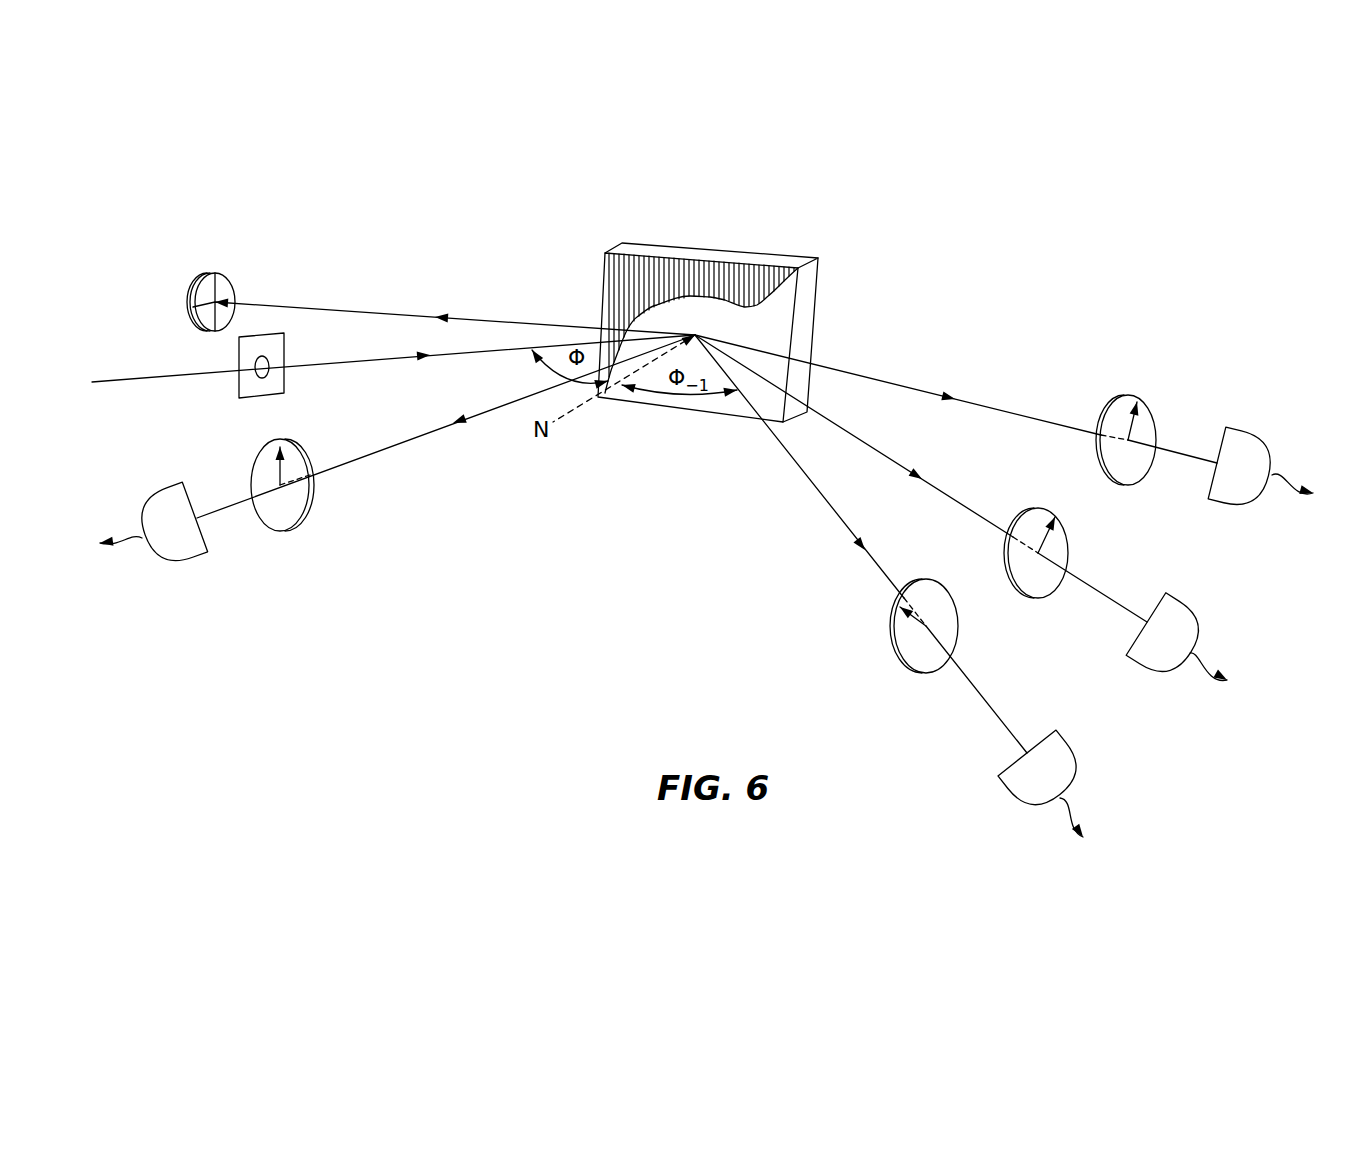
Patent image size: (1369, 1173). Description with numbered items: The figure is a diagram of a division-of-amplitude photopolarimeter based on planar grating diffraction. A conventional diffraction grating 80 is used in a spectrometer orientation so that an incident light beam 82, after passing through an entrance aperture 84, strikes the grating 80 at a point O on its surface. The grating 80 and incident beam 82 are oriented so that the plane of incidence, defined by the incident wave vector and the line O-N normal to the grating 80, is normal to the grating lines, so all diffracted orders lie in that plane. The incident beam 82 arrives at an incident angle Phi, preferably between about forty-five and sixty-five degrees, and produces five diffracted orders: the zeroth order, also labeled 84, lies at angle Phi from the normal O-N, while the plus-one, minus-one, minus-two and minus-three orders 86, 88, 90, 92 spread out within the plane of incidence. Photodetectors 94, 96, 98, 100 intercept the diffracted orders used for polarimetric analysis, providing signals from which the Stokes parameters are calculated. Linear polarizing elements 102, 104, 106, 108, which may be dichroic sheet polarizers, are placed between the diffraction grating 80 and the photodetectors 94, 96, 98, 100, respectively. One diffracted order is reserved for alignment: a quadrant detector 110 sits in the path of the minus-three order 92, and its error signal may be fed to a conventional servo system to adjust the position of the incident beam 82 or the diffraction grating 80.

The diffraction grating 80 is at (753, 253).
The incident light beam 82 is at (120, 377).
The entrance aperture 84 is at (284, 382).
The +1 diffracted order 86 is at (921, 390).
The -1 diffracted order 88 is at (843, 515).
The -2 diffracted order 90 is at (433, 435).
The -3 diffracted order 92 is at (408, 313).
The photodetector 94 is at (1168, 592).
The photodetector 96 is at (1240, 428).
The photodetector 98 is at (1057, 730).
The photodetector 100 is at (187, 563).
The linear polarizing element 102 is at (1042, 510).
The linear polarizing element 104 is at (1128, 393).
The linear polarizing element 106 is at (927, 575).
The linear polarizing element 108 is at (310, 505).
The quadrant detector 110 is at (232, 283).